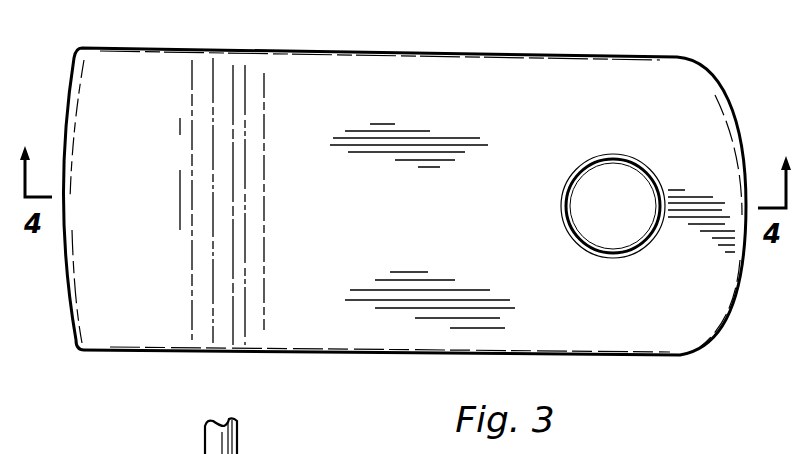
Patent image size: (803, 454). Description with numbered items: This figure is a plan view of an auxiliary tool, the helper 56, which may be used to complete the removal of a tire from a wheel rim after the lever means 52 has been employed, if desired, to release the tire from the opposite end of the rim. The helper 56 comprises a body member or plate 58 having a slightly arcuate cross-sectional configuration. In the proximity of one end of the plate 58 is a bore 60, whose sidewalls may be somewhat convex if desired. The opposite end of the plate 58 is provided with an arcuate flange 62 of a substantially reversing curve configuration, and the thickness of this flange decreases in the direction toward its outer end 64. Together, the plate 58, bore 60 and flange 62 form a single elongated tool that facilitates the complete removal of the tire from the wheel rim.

The lever means 52 is at (209, 453).
The helper 56 is at (363, 94).
The body member or plate 58 is at (422, 342).
The bore 60 is at (570, 197).
The arcuate flange 62 is at (145, 72).
The outer end 64 is at (66, 112).